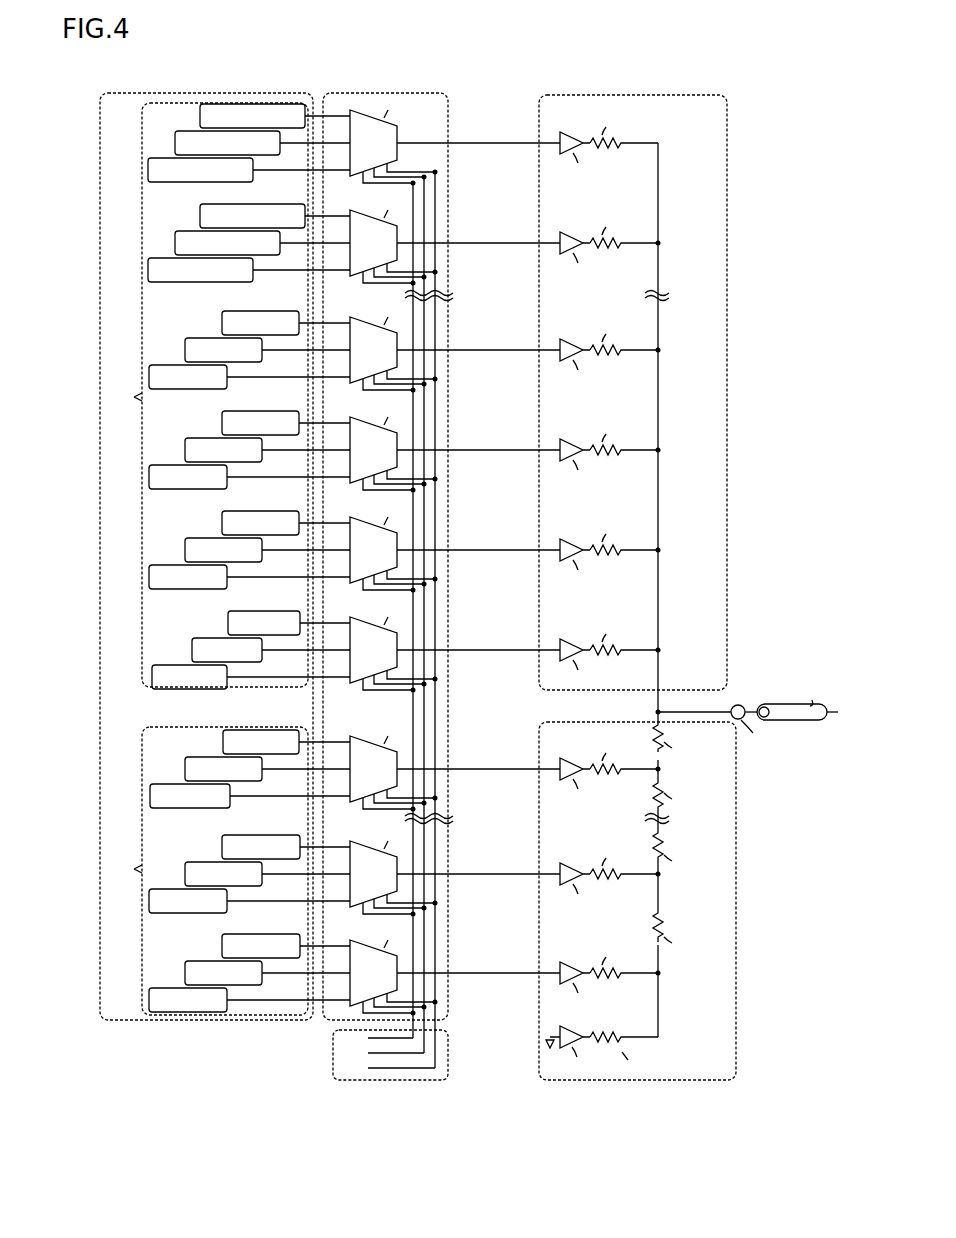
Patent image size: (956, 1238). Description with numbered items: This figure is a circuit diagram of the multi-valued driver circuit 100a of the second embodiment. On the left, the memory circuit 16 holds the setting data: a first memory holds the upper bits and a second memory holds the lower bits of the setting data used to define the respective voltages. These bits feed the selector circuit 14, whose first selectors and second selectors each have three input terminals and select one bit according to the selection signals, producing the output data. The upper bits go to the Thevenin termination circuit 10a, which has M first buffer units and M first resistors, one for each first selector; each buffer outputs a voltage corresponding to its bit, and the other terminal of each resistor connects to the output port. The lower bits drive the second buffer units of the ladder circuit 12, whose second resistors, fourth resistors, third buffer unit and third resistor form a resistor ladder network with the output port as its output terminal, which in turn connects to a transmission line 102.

The multi-valued driver circuit 100a is at (832, 88).
The memory circuit 16 is at (213, 96).
The selector circuit 14 is at (386, 96).
The Thevenin termination circuit 10a is at (626, 96).
The R-2R ladder circuit 12 is at (739, 946).
The transmission line 102 is at (806, 722).